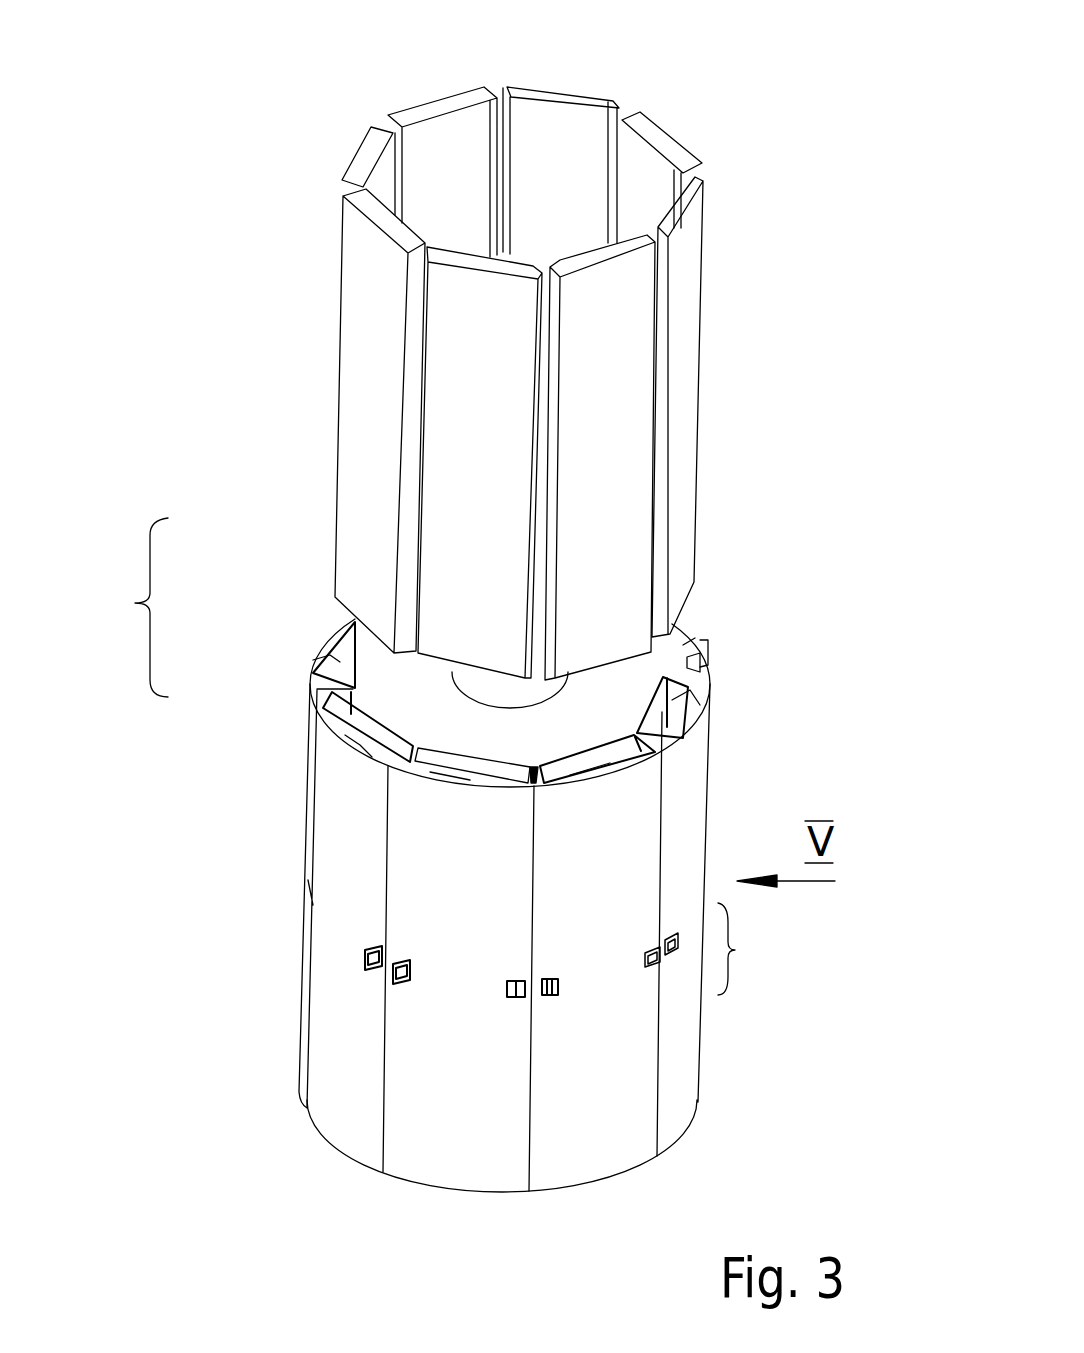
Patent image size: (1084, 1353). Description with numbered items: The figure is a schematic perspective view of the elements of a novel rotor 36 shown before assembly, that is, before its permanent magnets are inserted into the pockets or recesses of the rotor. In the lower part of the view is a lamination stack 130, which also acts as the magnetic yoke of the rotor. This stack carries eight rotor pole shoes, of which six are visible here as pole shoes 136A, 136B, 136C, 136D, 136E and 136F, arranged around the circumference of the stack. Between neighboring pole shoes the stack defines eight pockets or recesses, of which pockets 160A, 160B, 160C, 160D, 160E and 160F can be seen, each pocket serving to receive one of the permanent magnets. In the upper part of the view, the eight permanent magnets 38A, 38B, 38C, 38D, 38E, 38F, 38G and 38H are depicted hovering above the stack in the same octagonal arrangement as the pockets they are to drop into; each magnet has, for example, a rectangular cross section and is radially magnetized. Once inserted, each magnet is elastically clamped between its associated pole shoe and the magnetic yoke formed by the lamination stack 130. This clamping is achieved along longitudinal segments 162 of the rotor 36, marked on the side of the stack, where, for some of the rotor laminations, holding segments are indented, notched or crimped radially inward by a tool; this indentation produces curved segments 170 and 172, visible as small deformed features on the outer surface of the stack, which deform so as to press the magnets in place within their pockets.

The rotor 36 is at (129, 607).
The permanent magnet 38A is at (662, 140).
The permanent magnet 38B is at (695, 322).
The permanent magnet 38C is at (639, 472).
The permanent magnet 38D is at (515, 472).
The permanent magnet 38E is at (360, 408).
The permanent magnet 38F is at (364, 152).
The permanent magnet 38G is at (439, 106).
The permanent magnet 38H is at (566, 97).
The lamination stack 130 is at (432, 701).
The rotor pole shoe 136A is at (690, 648).
The rotor pole shoe 136B is at (690, 707).
The rotor pole shoe 136C is at (609, 768).
The rotor pole shoe 136D is at (452, 770).
The rotor pole shoe 136E is at (357, 740).
The rotor pole shoe 136F is at (327, 647).
The pocket 160A is at (667, 650).
The pocket 160B is at (658, 702).
The pocket 160C is at (593, 763).
The pocket 160D is at (490, 763).
The pocket 160E is at (343, 727).
The pocket 160F is at (323, 643).
The longitudinal segment 162 is at (760, 949).
The curved segment 170 is at (652, 963).
The curved segment 172 is at (552, 996).